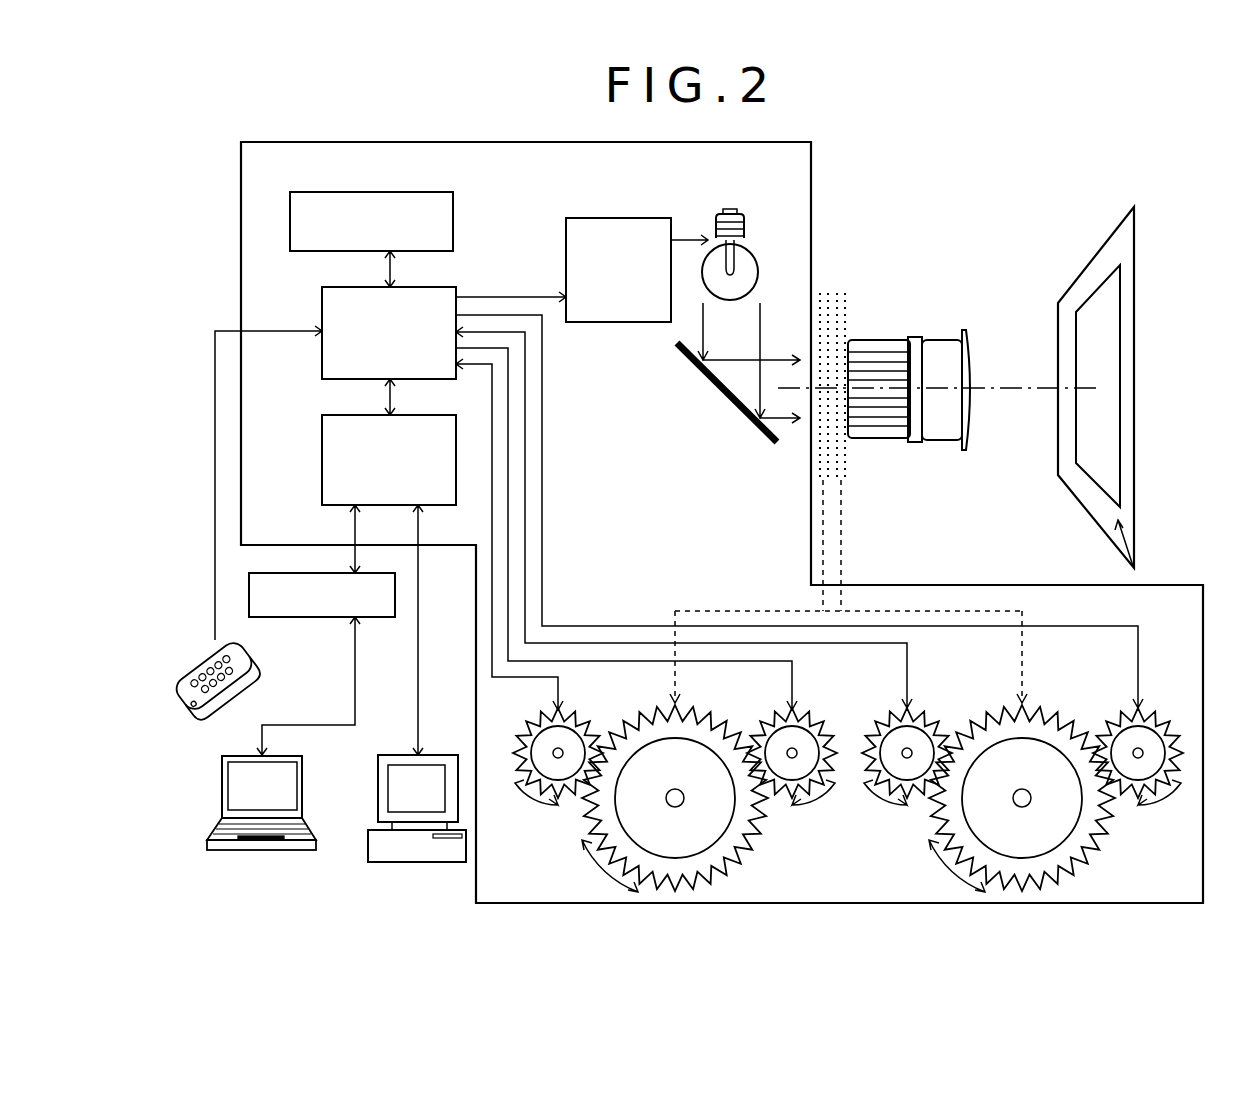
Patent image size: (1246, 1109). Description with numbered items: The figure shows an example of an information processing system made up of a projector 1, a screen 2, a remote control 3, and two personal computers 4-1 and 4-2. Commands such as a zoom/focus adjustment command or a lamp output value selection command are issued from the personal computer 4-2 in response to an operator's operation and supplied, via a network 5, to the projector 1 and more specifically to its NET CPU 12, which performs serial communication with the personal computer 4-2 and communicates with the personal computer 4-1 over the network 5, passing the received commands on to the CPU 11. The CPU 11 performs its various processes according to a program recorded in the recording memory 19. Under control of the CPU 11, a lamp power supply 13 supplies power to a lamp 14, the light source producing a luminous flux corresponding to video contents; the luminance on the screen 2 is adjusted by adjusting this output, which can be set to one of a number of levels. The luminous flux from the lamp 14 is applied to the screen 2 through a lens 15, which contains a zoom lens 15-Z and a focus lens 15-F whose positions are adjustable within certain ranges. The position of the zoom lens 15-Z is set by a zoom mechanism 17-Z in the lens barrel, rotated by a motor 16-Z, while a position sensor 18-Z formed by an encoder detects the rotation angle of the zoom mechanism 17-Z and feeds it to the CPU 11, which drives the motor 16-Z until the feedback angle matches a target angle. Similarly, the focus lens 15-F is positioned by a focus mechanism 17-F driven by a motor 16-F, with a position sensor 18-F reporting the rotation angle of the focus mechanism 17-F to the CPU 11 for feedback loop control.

The projector 1 is at (443, 141).
The screen 2 is at (1135, 461).
The remote control 3 is at (190, 700).
The personal computer 4-1 is at (233, 851).
The personal computer 4-2 is at (397, 863).
The network 5 is at (297, 618).
The CPU 11 is at (322, 366).
The NET CPU 12 is at (322, 454).
The lamp power supply 13 is at (598, 323).
The lamp 14 is at (748, 255).
The lens 15 is at (946, 338).
The zoom lens 15-Z is at (822, 293).
The focus lens 15-F is at (843, 293).
The motor 16-Z is at (757, 738).
The motor 16-F is at (1120, 738).
The zoom mechanism 17-Z is at (742, 850).
The focus mechanism 17-F is at (1088, 850).
The position sensor 18-Z is at (586, 728).
The position sensor 18-F is at (936, 728).
The recording memory 19 is at (300, 252).